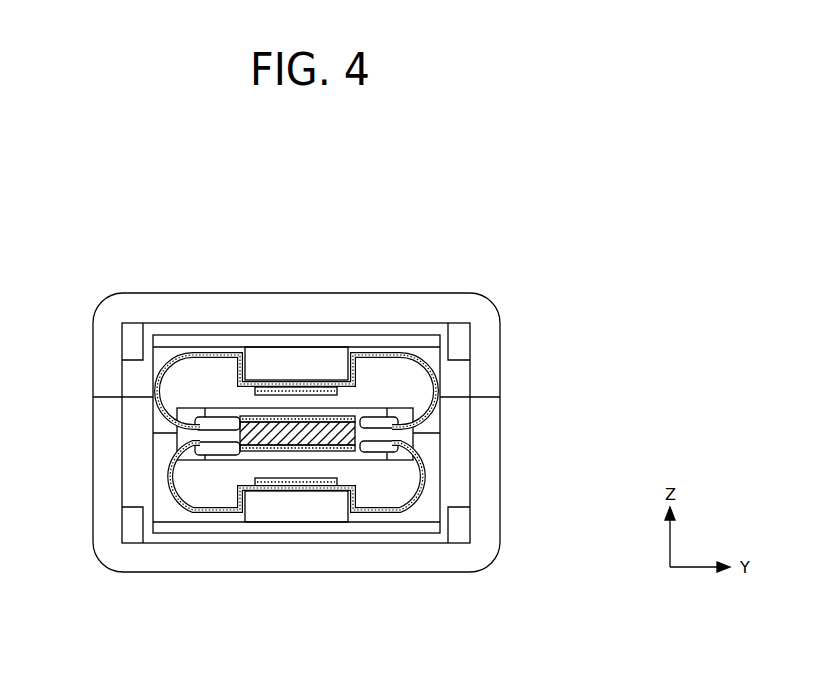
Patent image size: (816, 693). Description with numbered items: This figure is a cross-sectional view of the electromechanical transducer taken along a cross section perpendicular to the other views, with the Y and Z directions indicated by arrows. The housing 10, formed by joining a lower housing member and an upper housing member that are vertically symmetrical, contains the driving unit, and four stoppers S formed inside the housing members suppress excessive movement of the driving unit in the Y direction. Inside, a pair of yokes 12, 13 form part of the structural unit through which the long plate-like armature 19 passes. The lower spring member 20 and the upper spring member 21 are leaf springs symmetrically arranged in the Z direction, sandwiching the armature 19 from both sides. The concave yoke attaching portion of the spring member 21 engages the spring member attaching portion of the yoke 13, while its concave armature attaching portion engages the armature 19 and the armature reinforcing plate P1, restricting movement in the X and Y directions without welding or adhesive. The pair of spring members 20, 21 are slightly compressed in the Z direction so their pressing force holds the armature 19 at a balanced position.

The housing 10 is at (355, 310).
The yoke 12 is at (430, 518).
The yoke 13 is at (430, 352).
The armature 19 is at (265, 423).
The spring member 20 is at (210, 514).
The spring member 21 is at (218, 352).
The armature reinforcing plate P1 is at (318, 400).
The stopper S is at (133, 343).